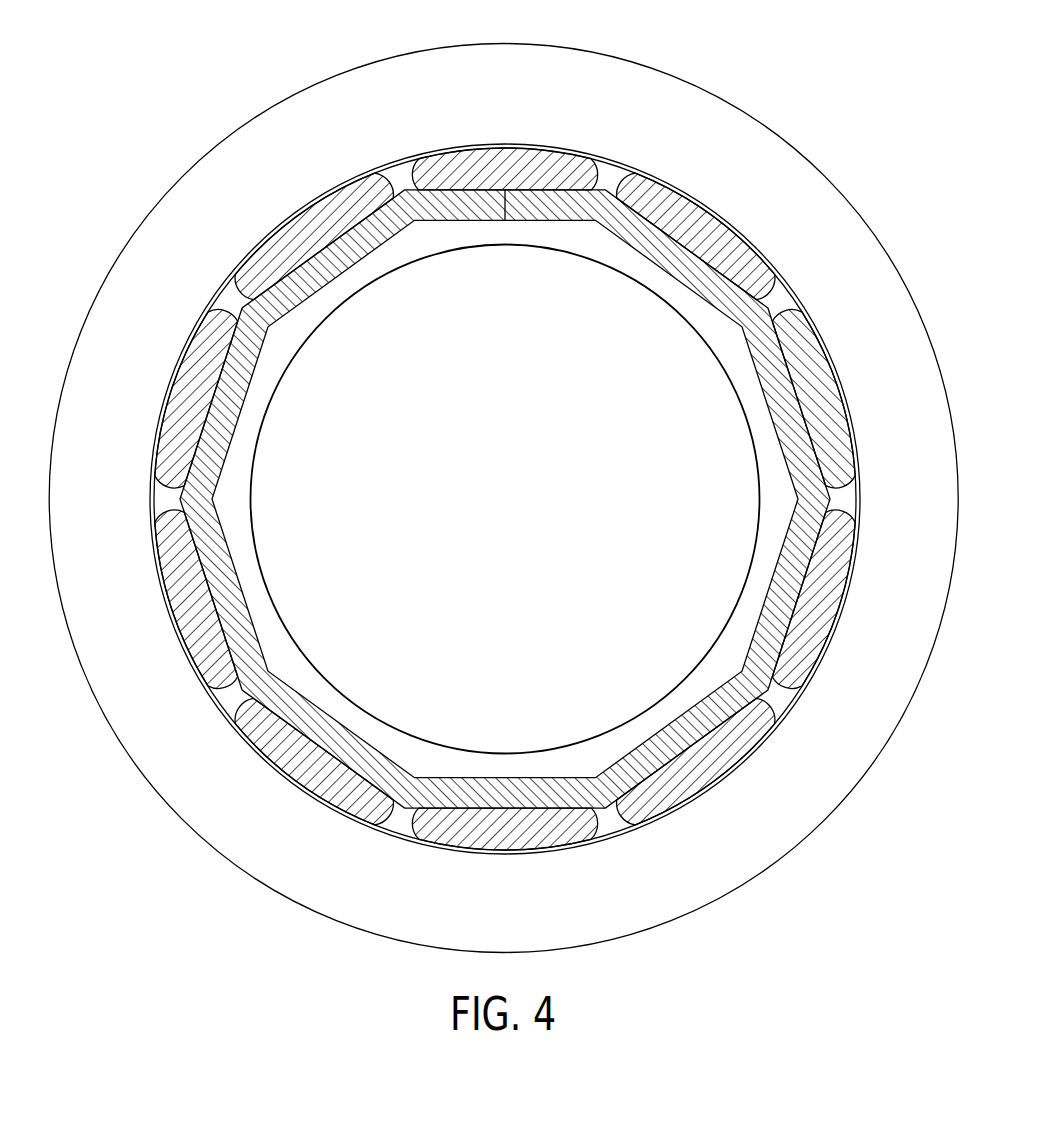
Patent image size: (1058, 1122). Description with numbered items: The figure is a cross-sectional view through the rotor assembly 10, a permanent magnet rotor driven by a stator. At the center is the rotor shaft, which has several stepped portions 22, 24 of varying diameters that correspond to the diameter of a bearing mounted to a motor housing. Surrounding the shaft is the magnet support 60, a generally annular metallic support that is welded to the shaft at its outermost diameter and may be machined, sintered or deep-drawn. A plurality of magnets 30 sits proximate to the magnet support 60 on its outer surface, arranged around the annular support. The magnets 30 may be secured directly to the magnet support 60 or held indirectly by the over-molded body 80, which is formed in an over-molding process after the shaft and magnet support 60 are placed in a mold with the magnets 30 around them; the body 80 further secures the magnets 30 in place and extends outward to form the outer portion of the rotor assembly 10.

The rotor assembly 10 is at (498, 482).
The stepped portion 22 is at (232, 297).
The stepped portion 24 is at (655, 721).
The magnets 30 is at (790, 330).
The magnet support 60 is at (773, 617).
The over-molded body 80 is at (123, 279).